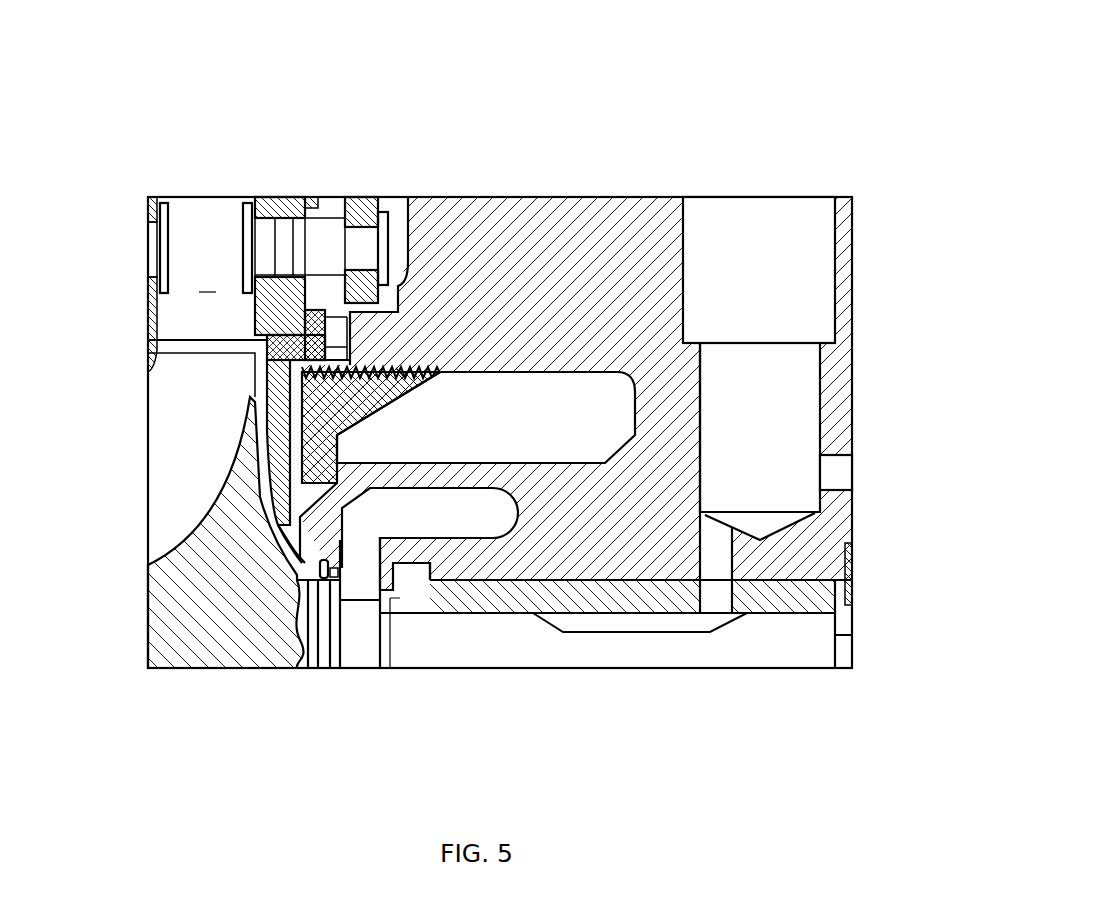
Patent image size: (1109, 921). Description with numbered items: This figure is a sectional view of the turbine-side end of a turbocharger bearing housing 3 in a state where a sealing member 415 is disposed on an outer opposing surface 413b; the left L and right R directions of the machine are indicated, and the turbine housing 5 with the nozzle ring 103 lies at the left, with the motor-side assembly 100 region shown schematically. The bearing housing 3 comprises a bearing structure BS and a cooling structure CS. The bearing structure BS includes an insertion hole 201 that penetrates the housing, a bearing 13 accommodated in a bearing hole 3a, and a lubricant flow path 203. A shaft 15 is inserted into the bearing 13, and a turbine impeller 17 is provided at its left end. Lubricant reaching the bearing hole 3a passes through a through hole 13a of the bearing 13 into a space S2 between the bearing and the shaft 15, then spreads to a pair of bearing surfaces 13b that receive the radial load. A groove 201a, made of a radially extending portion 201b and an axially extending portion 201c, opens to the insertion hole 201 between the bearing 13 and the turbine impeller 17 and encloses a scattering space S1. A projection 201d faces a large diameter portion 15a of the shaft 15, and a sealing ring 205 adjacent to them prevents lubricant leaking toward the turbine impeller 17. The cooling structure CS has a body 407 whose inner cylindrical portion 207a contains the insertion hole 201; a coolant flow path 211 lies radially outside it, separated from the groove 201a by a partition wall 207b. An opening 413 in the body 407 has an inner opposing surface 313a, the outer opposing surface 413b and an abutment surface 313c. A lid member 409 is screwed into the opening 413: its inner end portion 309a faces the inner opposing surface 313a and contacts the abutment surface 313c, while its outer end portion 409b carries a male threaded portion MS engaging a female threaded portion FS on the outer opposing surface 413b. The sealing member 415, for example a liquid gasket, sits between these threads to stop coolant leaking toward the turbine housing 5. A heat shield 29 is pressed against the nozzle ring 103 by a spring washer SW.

The bearing housing 3 is at (660, 200).
The bearing hole 3a is at (850, 600).
The turbine housing 5 is at (150, 175).
The bearing 13 is at (823, 607).
The through hole 13a is at (740, 598).
The bearing surface 13b is at (783, 616).
The shaft 15 is at (565, 648).
The large diameter portion 15a is at (333, 650).
The turbine impeller 17 is at (231, 650).
The heat shield 29 is at (268, 377).
The motor unit 100 is at (202, 144).
The nozzle ring 103 is at (280, 197).
The insertion hole 201 is at (318, 587).
The groove 201a is at (462, 530).
The radially extending portion 201b is at (322, 585).
The axially extending portion 201c is at (413, 525).
The projection 201d is at (320, 557).
The lubricant flow path 203 is at (833, 268).
The sealing ring 205 is at (322, 565).
The inner cylindrical portion 207a is at (608, 525).
The partition wall 207b is at (427, 475).
The coolant flow path 211 is at (553, 380).
The inner end portion 309a is at (330, 490).
The inner opposing surface 313a is at (322, 467).
The abutment surface 313c is at (440, 398).
The body 407 is at (610, 200).
The lid member 409 is at (315, 410).
The outer end portion 409b is at (337, 196).
The opening 413 is at (425, 366).
The outer opposing surface 413b is at (403, 366).
The sealing member 415 is at (390, 365).
The spring washer SW is at (340, 332).
The male threaded portion MS is at (370, 196).
The female threaded portion FS is at (412, 366).
The cooling structure CS is at (825, 32).
The bearing structure BS is at (766, 125).
The scattering space S1 is at (362, 545).
The space S2 is at (628, 618).
The left direction L is at (727, 715).
The right direction R is at (768, 715).